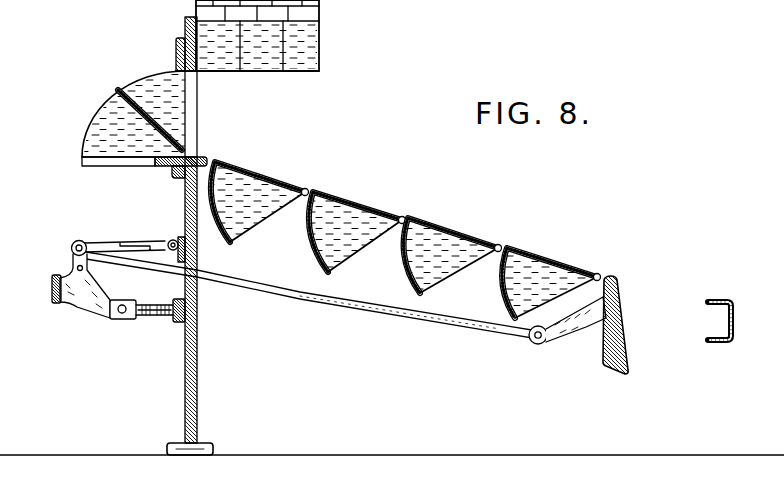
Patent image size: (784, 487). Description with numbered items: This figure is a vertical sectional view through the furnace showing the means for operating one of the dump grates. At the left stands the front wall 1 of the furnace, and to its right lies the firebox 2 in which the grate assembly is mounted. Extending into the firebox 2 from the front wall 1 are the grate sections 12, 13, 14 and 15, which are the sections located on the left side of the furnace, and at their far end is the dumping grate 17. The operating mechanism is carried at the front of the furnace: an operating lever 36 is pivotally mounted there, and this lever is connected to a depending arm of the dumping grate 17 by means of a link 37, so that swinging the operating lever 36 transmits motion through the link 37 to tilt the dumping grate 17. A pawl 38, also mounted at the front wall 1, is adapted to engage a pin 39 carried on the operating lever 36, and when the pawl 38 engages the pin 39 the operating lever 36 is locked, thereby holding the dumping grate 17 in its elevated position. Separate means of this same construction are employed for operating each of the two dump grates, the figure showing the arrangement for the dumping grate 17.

The front wall 1 is at (185, 368).
The firebox 2 is at (406, 233).
The grate section 12 is at (262, 180).
The grate section 13 is at (360, 210).
The grate section 14 is at (452, 240).
The grate section 15 is at (558, 266).
The dumping grate 17 is at (622, 326).
The operating lever 36 is at (90, 300).
The link 37 is at (350, 300).
The pawl 38 is at (150, 241).
The pin 39 is at (74, 265).